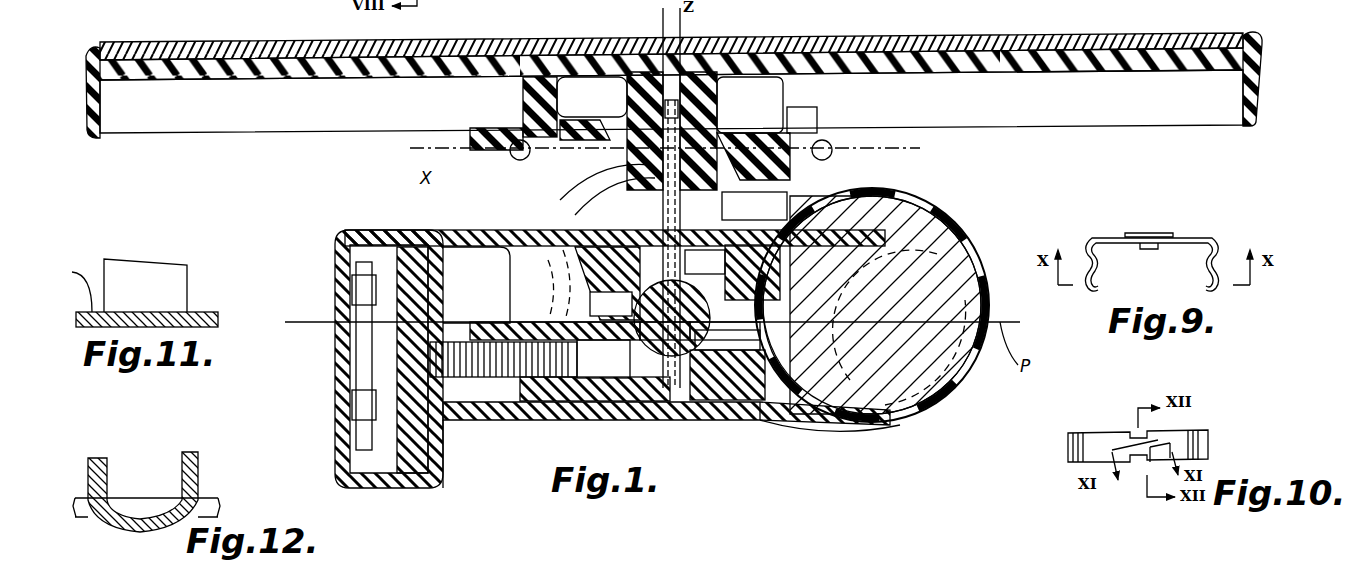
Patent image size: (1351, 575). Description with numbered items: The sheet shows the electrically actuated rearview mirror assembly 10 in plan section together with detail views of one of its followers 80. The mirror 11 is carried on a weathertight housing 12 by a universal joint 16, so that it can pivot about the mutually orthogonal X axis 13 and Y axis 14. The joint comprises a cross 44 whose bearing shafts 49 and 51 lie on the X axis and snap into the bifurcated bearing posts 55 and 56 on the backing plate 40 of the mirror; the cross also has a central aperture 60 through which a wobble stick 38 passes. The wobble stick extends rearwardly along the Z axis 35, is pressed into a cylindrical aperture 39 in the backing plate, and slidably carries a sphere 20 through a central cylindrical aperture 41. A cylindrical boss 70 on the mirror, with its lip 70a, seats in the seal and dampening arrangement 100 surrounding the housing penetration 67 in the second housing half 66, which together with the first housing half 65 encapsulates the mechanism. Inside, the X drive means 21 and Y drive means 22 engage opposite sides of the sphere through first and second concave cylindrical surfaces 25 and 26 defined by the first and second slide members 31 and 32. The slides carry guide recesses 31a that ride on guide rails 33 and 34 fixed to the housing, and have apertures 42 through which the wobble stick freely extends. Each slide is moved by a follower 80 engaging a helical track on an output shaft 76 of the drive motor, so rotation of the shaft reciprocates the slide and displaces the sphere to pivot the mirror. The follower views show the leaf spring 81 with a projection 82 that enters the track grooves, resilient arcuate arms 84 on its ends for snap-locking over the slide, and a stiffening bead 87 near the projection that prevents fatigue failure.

In FIG. 1, the rearview mirror assembly 10 is at (120, 180).
In FIG. 1, the mirror 11 is at (1220, 33).
In FIG. 1, the weathertight housing 12 is at (942, 385).
In FIG. 1, the X axis 13 is at (420, 150).
In FIG. 1, the Y axis 14 is at (826, 170).
In FIG. 1, the universal joint 16 is at (500, 133).
In FIG. 1, the sphere 20 is at (715, 340).
In FIG. 1, the X drive means 21 is at (975, 232).
In FIG. 1, the Y drive means 22 is at (330, 370).
In FIG. 1, the first concave cylindrical surface 25 is at (805, 412).
In FIG. 1, the second concave cylindrical surface 26 is at (600, 400).
In FIG. 1, the first slide member 31 is at (745, 300).
In FIG. 1, the guide recesses 31a is at (555, 270).
In FIG. 1, the second slide member 32 is at (562, 405).
In FIG. 1, the guide rails 33 is at (560, 236).
In FIG. 1, the guide rails 34 is at (772, 420).
In FIG. 1, the Z axis 35 is at (663, 35).
In FIG. 1, the wobble stick 38 is at (750, 105).
In FIG. 1, the cylindrical aperture 39 is at (706, 75).
In FIG. 1, the backing plate 40 is at (810, 38).
In FIG. 1, the cylindrical aperture 41 is at (672, 333).
In FIG. 1, the apertures 42 is at (712, 270).
In FIG. 1, the cross 44 is at (760, 128).
In FIG. 1, the bearing shaft 49 is at (845, 126).
In FIG. 1, the bearing shaft 51 is at (515, 160).
In FIG. 1, the bifurcated bearing post 55 is at (822, 92).
In FIG. 1, the bifurcated bearing post 56 is at (530, 84).
In FIG. 1, the central aperture 60 is at (585, 62).
In FIG. 1, the first housing half 65 is at (340, 440).
In FIG. 1, the second housing half 66 is at (345, 235).
In FIG. 1, the housing penetration 67 is at (741, 206).
In FIG. 1, the cylindrical boss 70 is at (592, 108).
In FIG. 1, the slide member lip 70a is at (735, 62).
In FIG. 1, the output shaft 76 is at (365, 385).
In FIG. 1, the follower 80 is at (488, 380).
In FIG. 9, the follower 80 is at (1178, 228).
In FIG. 10, the follower 80 is at (1196, 415).
In FIG. 11, the follower 80 is at (248, 228).
In FIG. 12, the follower 80 is at (165, 456).
In FIG. 9, the leaf spring 81 is at (1105, 238).
In FIG. 10, the leaf spring 81 is at (1100, 432).
In FIG. 11, the leaf spring 81 is at (65, 286).
In FIG. 12, the leaf spring 81 is at (86, 519).
In FIG. 9, the projection 82 is at (1142, 250).
In FIG. 10, the projection 82 is at (1160, 438).
In FIG. 11, the projection 82 is at (152, 300).
In FIG. 12, the projection 82 is at (110, 463).
In FIG. 9, the resilient arcuate arms 84 is at (1086, 283).
In FIG. 12, the bead 87 is at (138, 524).
In FIG. 1, the seal and dampening arrangement 100 is at (592, 197).